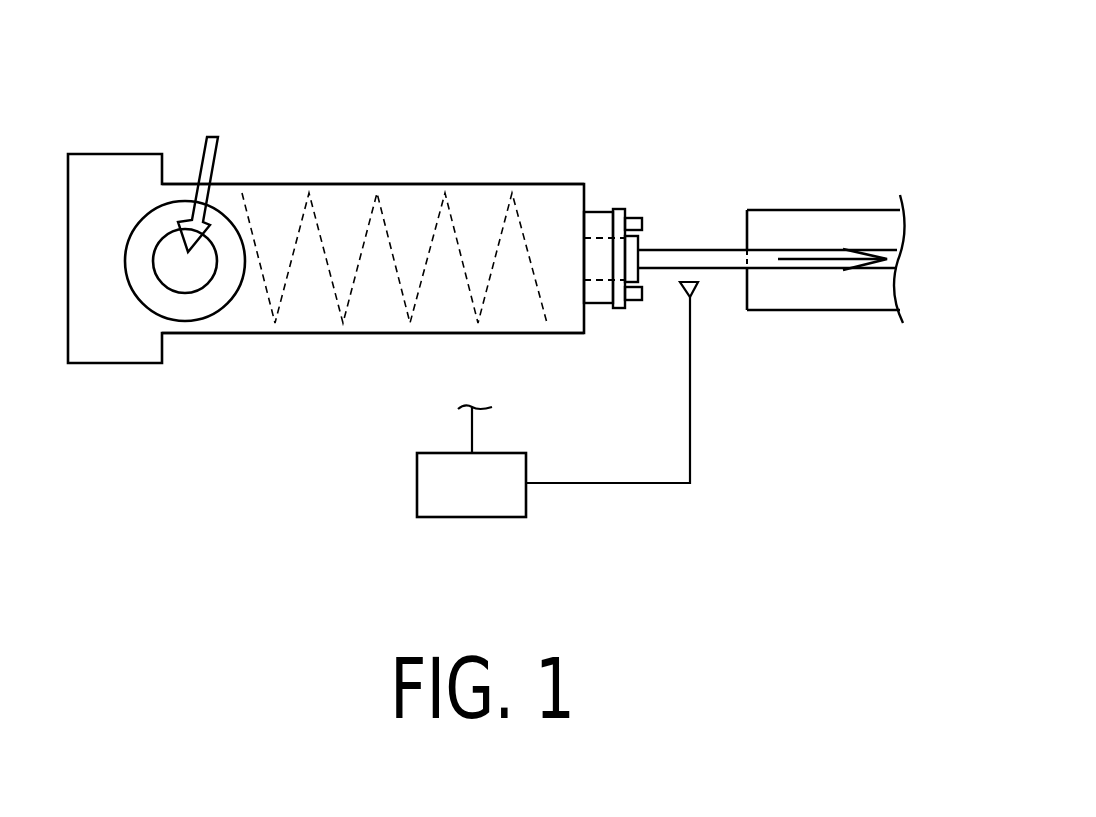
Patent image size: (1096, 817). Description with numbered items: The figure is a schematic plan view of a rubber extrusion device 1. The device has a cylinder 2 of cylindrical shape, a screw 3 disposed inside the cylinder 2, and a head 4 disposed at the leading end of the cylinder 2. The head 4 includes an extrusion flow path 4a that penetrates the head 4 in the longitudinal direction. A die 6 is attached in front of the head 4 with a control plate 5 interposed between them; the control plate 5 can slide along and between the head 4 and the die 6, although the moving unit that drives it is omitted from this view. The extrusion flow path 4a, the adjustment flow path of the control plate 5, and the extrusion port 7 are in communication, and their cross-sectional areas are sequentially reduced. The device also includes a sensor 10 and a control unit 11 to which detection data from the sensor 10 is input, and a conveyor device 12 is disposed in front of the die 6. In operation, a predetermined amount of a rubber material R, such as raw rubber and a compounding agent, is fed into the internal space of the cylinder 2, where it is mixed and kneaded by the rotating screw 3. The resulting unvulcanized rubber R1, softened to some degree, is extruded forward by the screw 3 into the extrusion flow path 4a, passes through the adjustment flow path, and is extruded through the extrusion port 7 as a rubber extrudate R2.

The rubber extrusion device 1 is at (472, 130).
The cylinder 2 is at (343, 195).
The screw 3 is at (285, 297).
The head 4 is at (600, 222).
The extrusion flow path 4a is at (596, 280).
The control plate 5 is at (617, 215).
The die 6 is at (634, 245).
The extrusion port 7 is at (637, 265).
The sensor 10 is at (698, 285).
The control unit 11 is at (462, 507).
The conveyor device 12 is at (835, 302).
The rubber material R is at (185, 210).
The unvulcanized rubber R1 is at (412, 217).
The rubber extrudate R2 is at (773, 250).